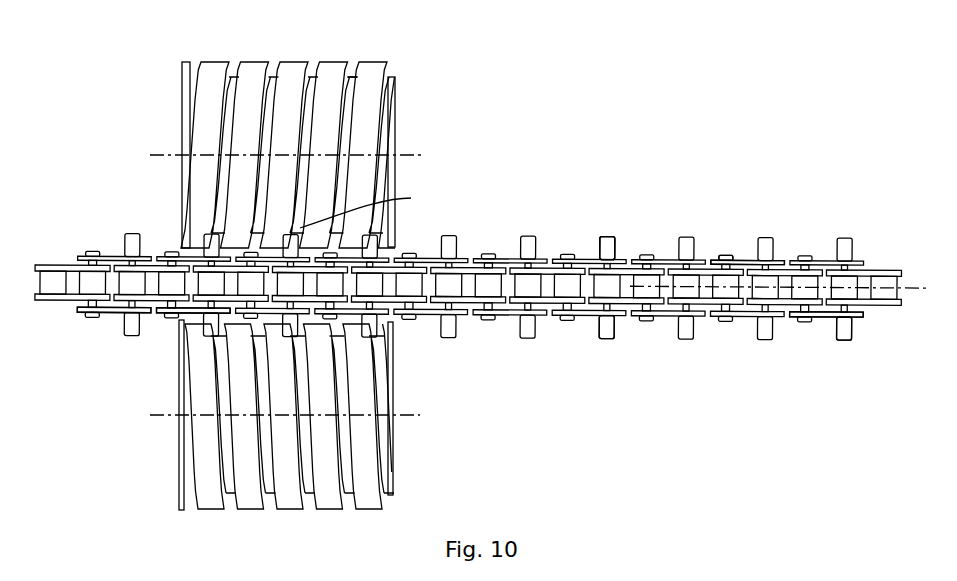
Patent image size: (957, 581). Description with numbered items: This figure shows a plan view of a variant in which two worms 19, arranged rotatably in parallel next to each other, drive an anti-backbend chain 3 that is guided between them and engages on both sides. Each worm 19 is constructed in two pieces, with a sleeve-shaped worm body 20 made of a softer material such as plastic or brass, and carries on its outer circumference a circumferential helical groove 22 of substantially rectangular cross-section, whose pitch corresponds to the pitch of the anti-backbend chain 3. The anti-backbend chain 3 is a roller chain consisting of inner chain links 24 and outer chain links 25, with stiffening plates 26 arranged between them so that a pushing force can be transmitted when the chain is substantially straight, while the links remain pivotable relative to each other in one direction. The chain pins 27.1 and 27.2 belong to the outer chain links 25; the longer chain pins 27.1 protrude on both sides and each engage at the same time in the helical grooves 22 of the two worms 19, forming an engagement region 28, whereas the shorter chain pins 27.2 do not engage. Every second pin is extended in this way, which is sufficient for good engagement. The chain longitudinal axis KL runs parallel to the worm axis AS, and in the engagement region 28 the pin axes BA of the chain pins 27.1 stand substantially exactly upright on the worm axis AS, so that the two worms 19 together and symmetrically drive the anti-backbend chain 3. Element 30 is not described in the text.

The anti-backbend chain 3 is at (486, 316).
The worm 19 is at (317, 135).
The worm body 20 is at (385, 147).
The helical groove 22 is at (352, 76).
The inner chain links 24 is at (787, 260).
The outer chain links 25 is at (828, 315).
The stiffening plates 26 is at (107, 313).
The chain pins 27.1 is at (608, 238).
The chain pins 27.2 is at (727, 254).
The engagement region 28 is at (616, 243).
The pin 30 is at (856, 348).
The worm axis AS is at (415, 413).
The pin axes BA is at (366, 210).
The chain longitudinal axis KL is at (784, 268).